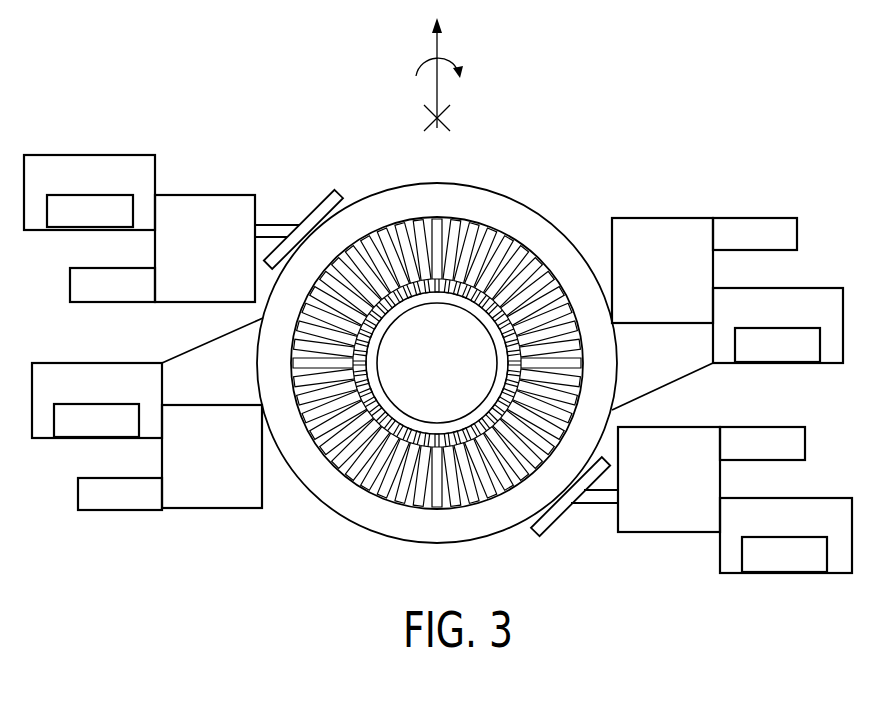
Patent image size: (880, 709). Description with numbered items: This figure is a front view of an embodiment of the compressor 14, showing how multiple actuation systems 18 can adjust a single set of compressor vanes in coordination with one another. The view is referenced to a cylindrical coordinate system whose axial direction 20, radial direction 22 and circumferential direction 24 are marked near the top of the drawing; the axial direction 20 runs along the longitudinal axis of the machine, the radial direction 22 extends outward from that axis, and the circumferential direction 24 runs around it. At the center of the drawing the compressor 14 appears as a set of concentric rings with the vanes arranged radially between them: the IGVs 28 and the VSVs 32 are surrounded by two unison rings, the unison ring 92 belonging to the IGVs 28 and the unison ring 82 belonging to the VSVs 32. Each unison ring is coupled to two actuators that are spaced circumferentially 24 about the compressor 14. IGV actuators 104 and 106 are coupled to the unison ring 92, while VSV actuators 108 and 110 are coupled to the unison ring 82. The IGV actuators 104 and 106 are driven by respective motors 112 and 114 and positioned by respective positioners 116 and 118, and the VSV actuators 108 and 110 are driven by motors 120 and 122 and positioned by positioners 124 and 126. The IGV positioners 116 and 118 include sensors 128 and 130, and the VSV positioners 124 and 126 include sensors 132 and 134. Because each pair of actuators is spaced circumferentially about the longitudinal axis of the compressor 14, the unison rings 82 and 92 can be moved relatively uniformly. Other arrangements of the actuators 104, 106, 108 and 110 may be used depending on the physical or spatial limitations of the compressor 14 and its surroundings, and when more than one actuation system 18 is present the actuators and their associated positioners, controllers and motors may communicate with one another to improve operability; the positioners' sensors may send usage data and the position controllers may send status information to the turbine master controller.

The compressor 14 is at (449, 334).
The actuation system 18 is at (436, 372).
The axial direction 20 is at (425, 118).
The radial direction 22 is at (438, 42).
The circumferential direction 24 is at (421, 65).
The IGVs 28 is at (398, 235).
The VSVs 32 is at (490, 226).
The unison ring 82 is at (438, 183).
The unison ring 92 is at (563, 230).
The IGV actuator 104 is at (204, 195).
The IGV actuator 106 is at (672, 532).
The VSV actuator 108 is at (670, 218).
The VSV actuator 110 is at (203, 508).
The motor 112 is at (135, 268).
The motor 114 is at (762, 427).
The positioner 116 is at (90, 155).
The positioner 118 is at (785, 498).
The motor 120 is at (752, 218).
The motor 122 is at (142, 478).
The positioner 124 is at (780, 288).
The positioner 126 is at (96, 363).
The sensor 128 is at (47, 212).
The sensor 130 is at (742, 555).
The sensor 132 is at (735, 343).
The sensor 134 is at (54, 421).